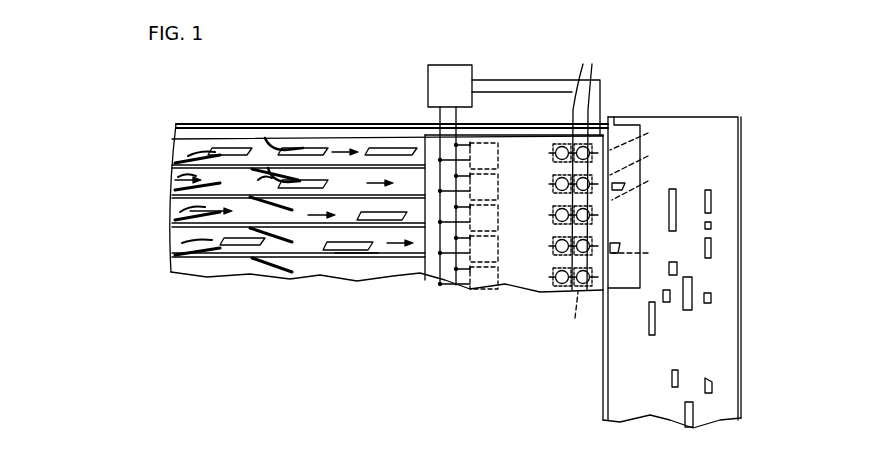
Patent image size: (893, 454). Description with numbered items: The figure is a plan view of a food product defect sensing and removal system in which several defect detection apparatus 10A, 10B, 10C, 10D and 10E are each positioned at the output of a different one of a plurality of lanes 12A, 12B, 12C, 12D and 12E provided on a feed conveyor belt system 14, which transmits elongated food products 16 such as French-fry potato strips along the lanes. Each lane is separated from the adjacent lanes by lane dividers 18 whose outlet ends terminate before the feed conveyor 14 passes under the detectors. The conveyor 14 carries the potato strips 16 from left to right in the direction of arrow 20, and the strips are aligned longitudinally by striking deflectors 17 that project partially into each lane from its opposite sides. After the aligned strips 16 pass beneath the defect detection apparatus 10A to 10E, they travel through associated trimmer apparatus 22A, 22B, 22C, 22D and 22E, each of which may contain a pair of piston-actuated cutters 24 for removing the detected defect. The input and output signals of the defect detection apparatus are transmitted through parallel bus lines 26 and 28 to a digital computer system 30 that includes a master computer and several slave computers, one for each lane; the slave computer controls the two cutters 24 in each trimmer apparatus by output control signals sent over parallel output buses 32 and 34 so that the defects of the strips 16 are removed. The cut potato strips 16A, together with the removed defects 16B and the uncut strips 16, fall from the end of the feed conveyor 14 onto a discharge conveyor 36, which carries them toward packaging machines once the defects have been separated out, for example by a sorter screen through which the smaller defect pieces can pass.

The defect detection apparatus 10A is at (498, 163).
The defect detection apparatus 10B is at (498, 194).
The defect detection apparatus 10C is at (498, 225).
The defect detection apparatus 10D is at (498, 256).
The defect detection apparatus 10E is at (498, 286).
The lane 12A is at (311, 130).
The lane 12B is at (340, 173).
The lane 12C is at (370, 208).
The lane 12D is at (313, 255).
The lane 12E is at (368, 276).
The feed conveyor belt system 14 is at (232, 275).
The elongated food products 16 is at (284, 140).
The cut potato strips 16A is at (712, 200).
The removed defects 16B is at (712, 226).
The deflectors 17 is at (198, 152).
The lane dividers 18 is at (247, 142).
The arrow 20 is at (182, 208).
The trimmer apparatus 22A is at (645, 133).
The trimmer apparatus 22B is at (645, 156).
The trimmer apparatus 22C is at (645, 181).
The trimmer apparatus 22D is at (645, 253).
The trimmer apparatus 22E is at (575, 315).
The piston-actuated cutters 24 is at (547, 313).
The parallel bus line 26 is at (456, 122).
The parallel bus line 28 is at (440, 122).
The digital computer system 30 is at (428, 80).
The parallel output bus 32 is at (518, 92).
The parallel output bus 34 is at (490, 80).
The discharge conveyor 36 is at (713, 367).